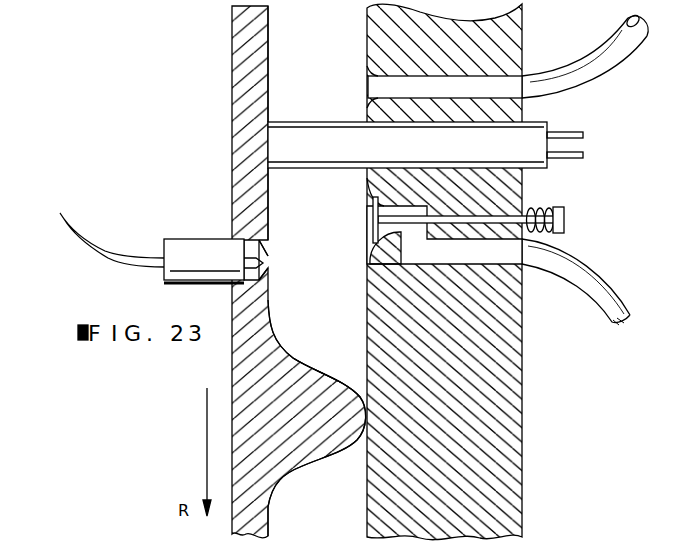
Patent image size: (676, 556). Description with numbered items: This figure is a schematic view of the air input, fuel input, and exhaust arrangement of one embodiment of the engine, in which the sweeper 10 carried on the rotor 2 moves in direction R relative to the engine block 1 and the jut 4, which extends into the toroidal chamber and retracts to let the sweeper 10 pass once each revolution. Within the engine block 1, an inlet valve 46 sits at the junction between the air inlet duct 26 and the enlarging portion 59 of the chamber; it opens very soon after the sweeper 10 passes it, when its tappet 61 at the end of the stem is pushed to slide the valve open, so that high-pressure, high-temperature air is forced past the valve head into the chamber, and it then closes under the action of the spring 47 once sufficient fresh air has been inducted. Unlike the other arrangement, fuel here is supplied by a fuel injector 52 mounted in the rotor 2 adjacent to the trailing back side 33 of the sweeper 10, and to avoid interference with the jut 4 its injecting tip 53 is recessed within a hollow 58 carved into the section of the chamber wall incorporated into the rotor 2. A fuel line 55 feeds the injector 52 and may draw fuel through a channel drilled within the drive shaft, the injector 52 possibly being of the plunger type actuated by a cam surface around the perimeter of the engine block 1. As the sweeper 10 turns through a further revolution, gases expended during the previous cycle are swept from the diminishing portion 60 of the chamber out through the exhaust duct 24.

The engine block 1 is at (522, 473).
The rotor 2 is at (229, 176).
The jut 4 is at (350, 132).
The sweeper 10 is at (331, 420).
The exhaust duct 24 is at (524, 76).
The air inlet duct 26 is at (604, 326).
The back side of the sweeper 33 is at (329, 350).
The inlet valve 46 is at (372, 222).
The spring 47 is at (526, 212).
The fuel injector 52 is at (187, 250).
The injecting tip 53 is at (267, 264).
The fuel line 55 is at (104, 255).
The hollow 58 is at (260, 283).
The enlarging portion of the toroidal chamber 59 is at (284, 190).
The diminishing portion of the toroidal chamber 60 is at (304, 108).
The tappet 61 is at (564, 222).